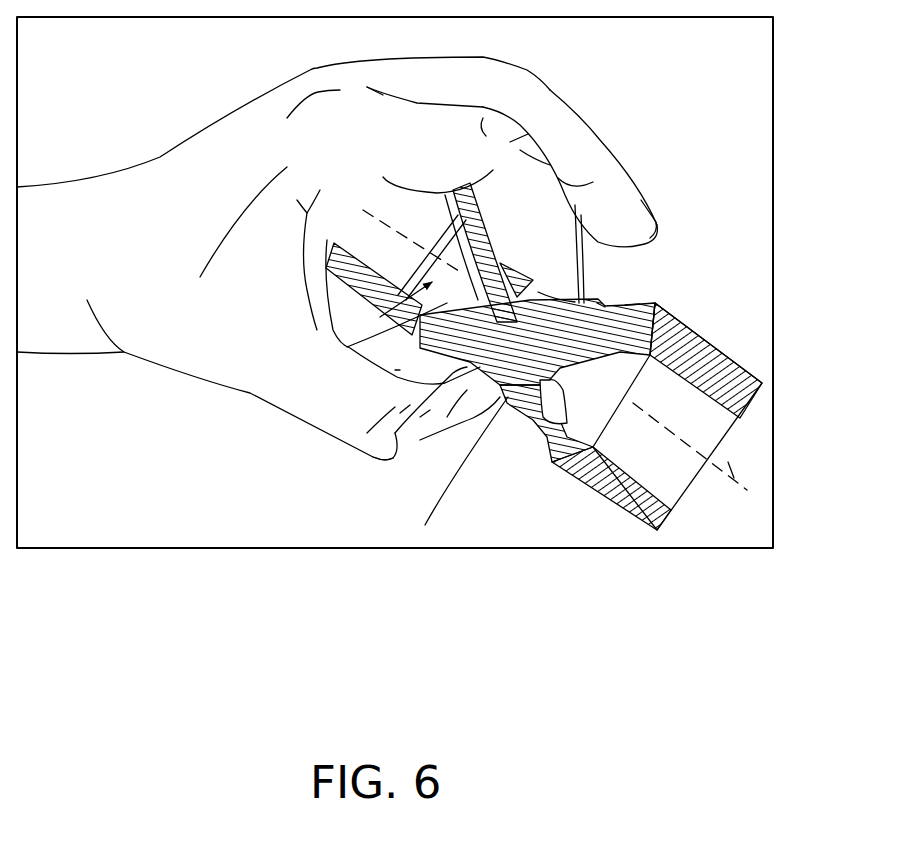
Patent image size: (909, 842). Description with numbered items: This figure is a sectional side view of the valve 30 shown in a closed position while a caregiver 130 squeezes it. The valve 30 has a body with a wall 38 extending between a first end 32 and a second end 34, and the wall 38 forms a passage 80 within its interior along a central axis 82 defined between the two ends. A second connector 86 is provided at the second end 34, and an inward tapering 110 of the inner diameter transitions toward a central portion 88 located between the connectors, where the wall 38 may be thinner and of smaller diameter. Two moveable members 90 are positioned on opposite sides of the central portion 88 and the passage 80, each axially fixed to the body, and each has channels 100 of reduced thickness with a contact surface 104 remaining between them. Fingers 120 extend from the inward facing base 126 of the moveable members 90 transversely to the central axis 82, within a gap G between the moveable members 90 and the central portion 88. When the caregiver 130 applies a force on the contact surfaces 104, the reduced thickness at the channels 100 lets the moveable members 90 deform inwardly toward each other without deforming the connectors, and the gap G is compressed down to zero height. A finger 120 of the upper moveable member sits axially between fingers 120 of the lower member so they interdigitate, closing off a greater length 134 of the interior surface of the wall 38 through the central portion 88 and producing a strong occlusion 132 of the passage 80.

The valve 30 is at (713, 103).
The first end 32 is at (336, 240).
The second end 34 is at (650, 535).
The wall 38 is at (493, 302).
The passage 80 is at (689, 502).
The central axis 82 is at (732, 466).
The second connector 86 is at (727, 352).
The central portion 88 is at (347, 347).
The moveable members 90 is at (604, 298).
The channels 100 is at (632, 303).
The contact surface 104 is at (505, 400).
The inward tapering 110 is at (648, 362).
The fingers 120 is at (420, 417).
The inward facing base 126 is at (400, 413).
The caregiver 130 is at (562, 253).
The occlusion 132 is at (555, 358).
The length 134 is at (538, 292).
The gap G is at (395, 370).